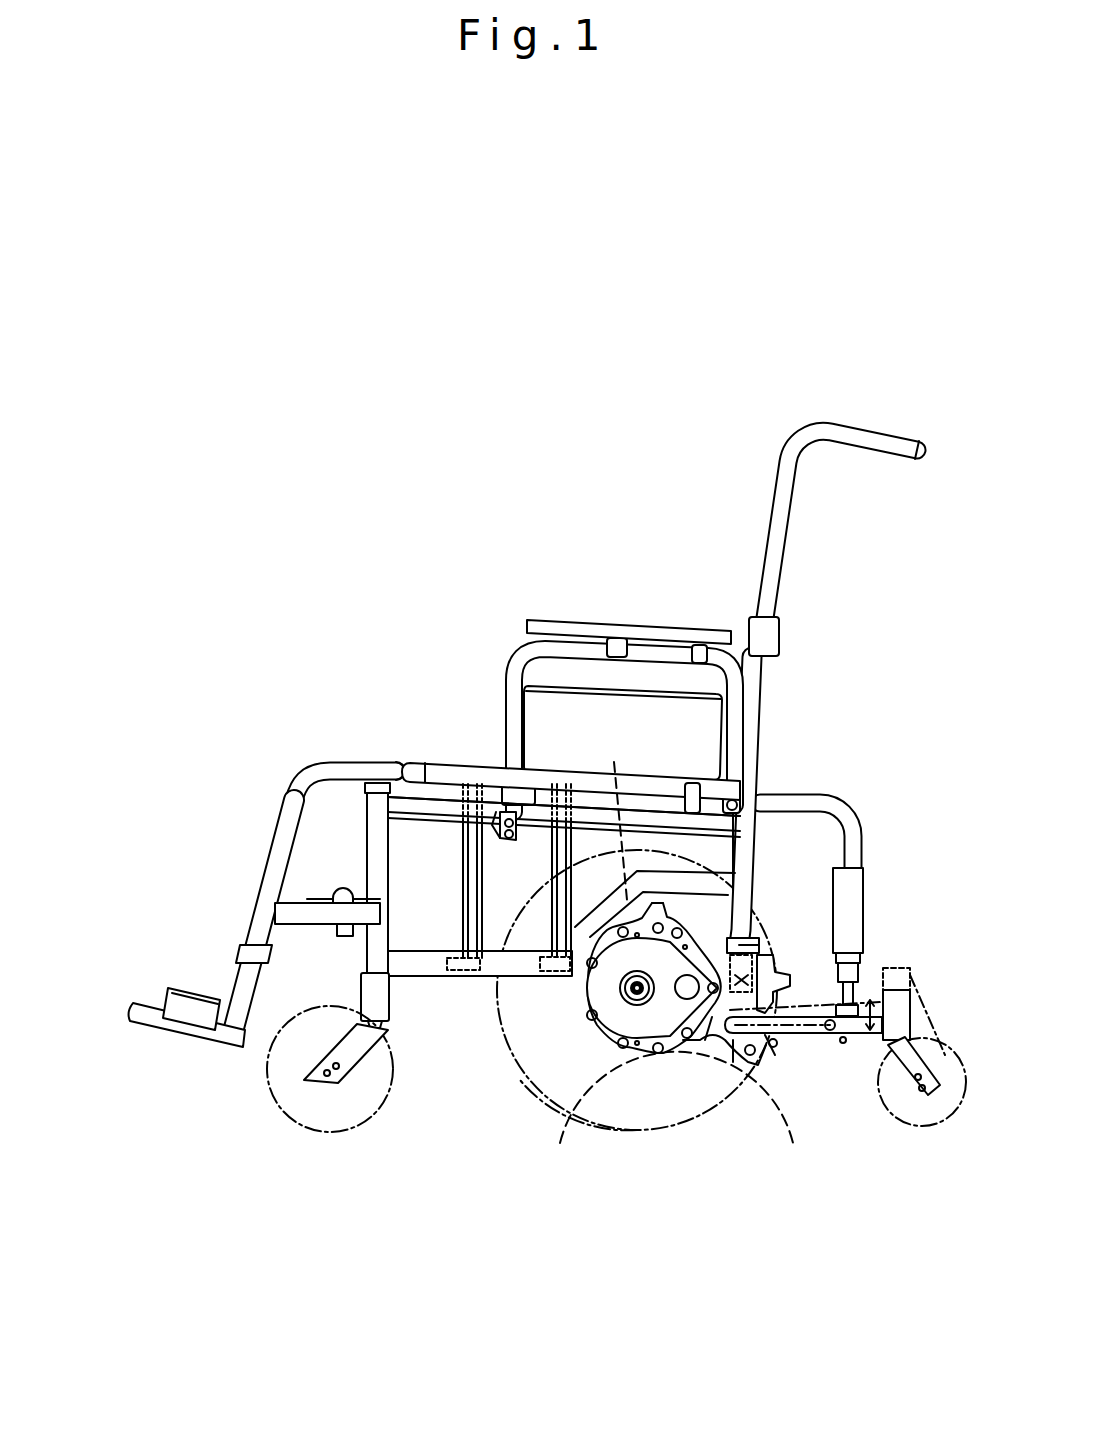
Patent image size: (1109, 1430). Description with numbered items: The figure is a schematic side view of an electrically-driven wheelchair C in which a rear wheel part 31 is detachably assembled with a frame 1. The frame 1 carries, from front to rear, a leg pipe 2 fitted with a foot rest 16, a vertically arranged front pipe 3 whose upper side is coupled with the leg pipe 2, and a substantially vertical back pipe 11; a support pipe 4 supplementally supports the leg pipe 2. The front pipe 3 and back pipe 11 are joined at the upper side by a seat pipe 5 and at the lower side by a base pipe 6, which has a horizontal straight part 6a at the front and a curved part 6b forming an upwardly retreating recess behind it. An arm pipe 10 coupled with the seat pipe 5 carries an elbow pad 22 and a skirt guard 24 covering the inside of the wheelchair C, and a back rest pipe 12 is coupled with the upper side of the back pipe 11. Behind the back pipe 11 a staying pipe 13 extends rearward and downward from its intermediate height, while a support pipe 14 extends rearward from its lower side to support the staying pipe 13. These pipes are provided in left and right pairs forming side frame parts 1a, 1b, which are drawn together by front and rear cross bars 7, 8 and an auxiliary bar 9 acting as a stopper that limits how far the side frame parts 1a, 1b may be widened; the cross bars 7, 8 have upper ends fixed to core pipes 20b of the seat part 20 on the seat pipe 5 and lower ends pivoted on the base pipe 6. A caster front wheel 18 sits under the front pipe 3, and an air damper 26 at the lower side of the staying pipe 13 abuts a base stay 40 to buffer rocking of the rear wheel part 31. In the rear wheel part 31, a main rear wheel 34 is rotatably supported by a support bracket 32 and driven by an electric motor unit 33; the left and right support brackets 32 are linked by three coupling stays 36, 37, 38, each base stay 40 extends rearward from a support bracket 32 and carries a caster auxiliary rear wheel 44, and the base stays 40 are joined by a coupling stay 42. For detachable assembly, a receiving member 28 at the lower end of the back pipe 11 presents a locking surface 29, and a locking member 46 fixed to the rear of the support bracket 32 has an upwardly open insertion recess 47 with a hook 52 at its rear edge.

The wheelchair C is at (676, 392).
The frame 1 is at (340, 606).
The left side frame part 1a is at (298, 740).
The right side frame part 1b is at (342, 740).
The leg pipe 2 is at (268, 882).
The front pipe 3 is at (373, 847).
The support pipe 4 is at (307, 917).
The seat pipe 5 is at (427, 803).
The base pipe 6 is at (480, 993).
The straight part 6a is at (426, 965).
The curved part 6b is at (680, 883).
The cross bar 7 is at (466, 905).
The cross bar 8 is at (552, 907).
The auxiliary bar 9 is at (640, 903).
The arm pipe 10 is at (530, 647).
The back pipe 11 is at (760, 713).
The back rest pipe 12 is at (777, 551).
The staying pipe 13 is at (832, 806).
The support pipe 14 is at (795, 975).
The foot rest 16 is at (153, 1015).
The front wheel 18 is at (392, 1123).
The seat part 20 is at (457, 773).
The core pipe 20b is at (564, 806).
The elbow pad 22 is at (596, 626).
The skirt guard 24 is at (669, 707).
The air damper 26 is at (892, 968).
The receiving member 28 is at (694, 1035).
The locking surface 29 is at (755, 928).
The rear wheel part 31 is at (592, 1137).
The support bracket 32 is at (715, 1030).
The electric motor unit 33 is at (598, 1022).
The main rear wheel 34 is at (643, 1132).
The coupling stay 36 is at (617, 814).
The coupling stay 37 is at (566, 1122).
The coupling stay 38 is at (775, 1056).
The base stay 40 is at (803, 1037).
The coupling stay 42 is at (843, 1043).
The auxiliary rear wheel 44 is at (905, 1133).
The locking member 46 is at (853, 972).
The insertion recess 47 is at (731, 1035).
The hook 52 is at (848, 872).